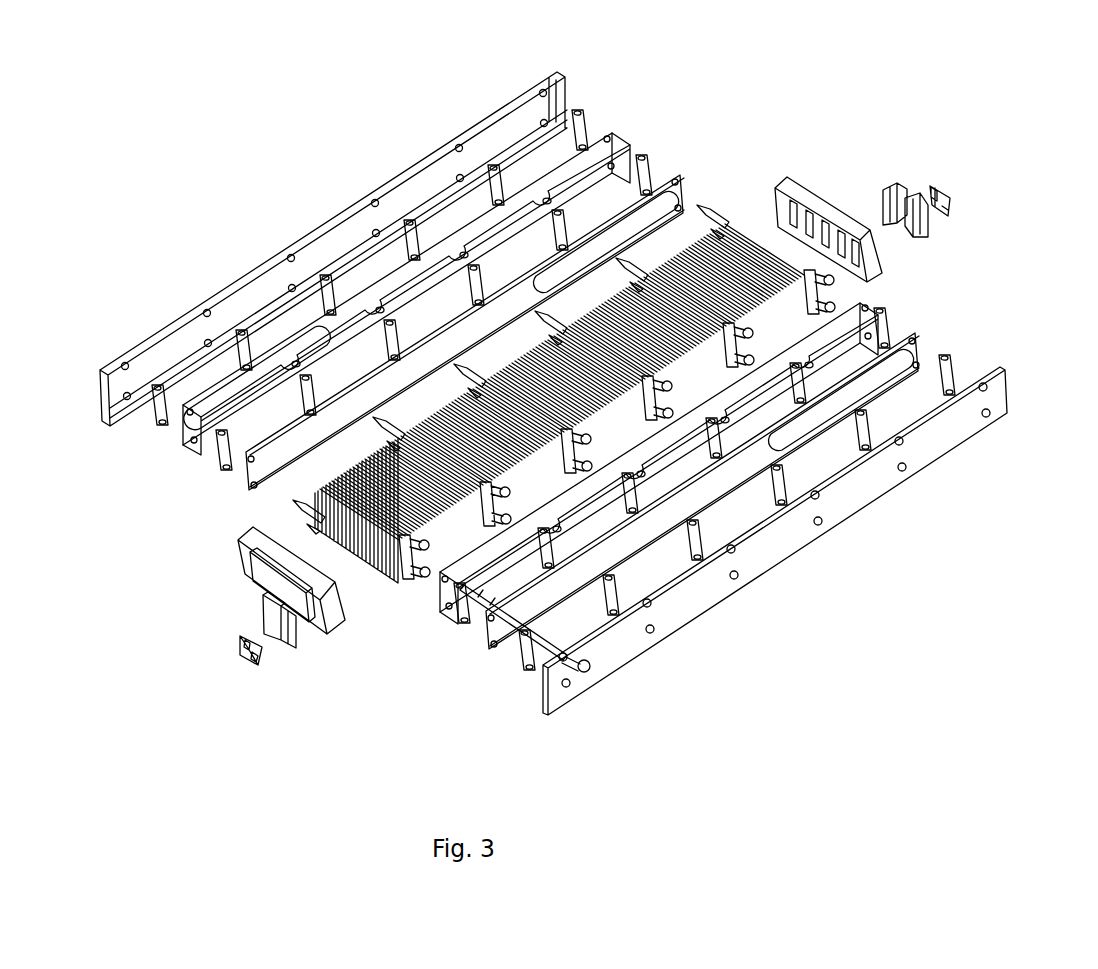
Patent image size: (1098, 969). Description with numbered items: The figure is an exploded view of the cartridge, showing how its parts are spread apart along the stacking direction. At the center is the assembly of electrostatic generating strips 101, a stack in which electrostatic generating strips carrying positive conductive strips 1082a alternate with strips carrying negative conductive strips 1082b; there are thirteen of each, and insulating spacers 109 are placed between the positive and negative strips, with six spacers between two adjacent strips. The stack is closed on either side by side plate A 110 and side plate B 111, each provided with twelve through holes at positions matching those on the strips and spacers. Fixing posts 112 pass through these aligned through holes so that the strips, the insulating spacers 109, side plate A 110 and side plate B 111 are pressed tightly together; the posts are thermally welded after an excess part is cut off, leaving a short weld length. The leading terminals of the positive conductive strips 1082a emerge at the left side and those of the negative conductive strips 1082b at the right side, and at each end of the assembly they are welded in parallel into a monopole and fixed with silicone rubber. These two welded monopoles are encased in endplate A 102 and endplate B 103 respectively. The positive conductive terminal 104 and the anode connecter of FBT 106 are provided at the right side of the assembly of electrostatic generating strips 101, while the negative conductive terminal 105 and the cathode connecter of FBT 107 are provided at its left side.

The assembly of electrostatic generating strips 101 is at (320, 500).
The endplate A 102 is at (800, 192).
The endplate B 103 is at (262, 582).
The positive conductive terminal 104 is at (927, 228).
The negative conductive terminal 105 is at (295, 642).
The anode connecter of FBT 106 is at (941, 187).
The cathode connecter of FBT 107 is at (250, 663).
The insulating spacer 109 is at (887, 323).
The side plate A 110 is at (1000, 417).
The side plate B 111 is at (556, 93).
The fixing post 112 is at (723, 209).
The positive conductive strip 1082a is at (917, 352).
The negative conductive strip 1082b is at (625, 142).